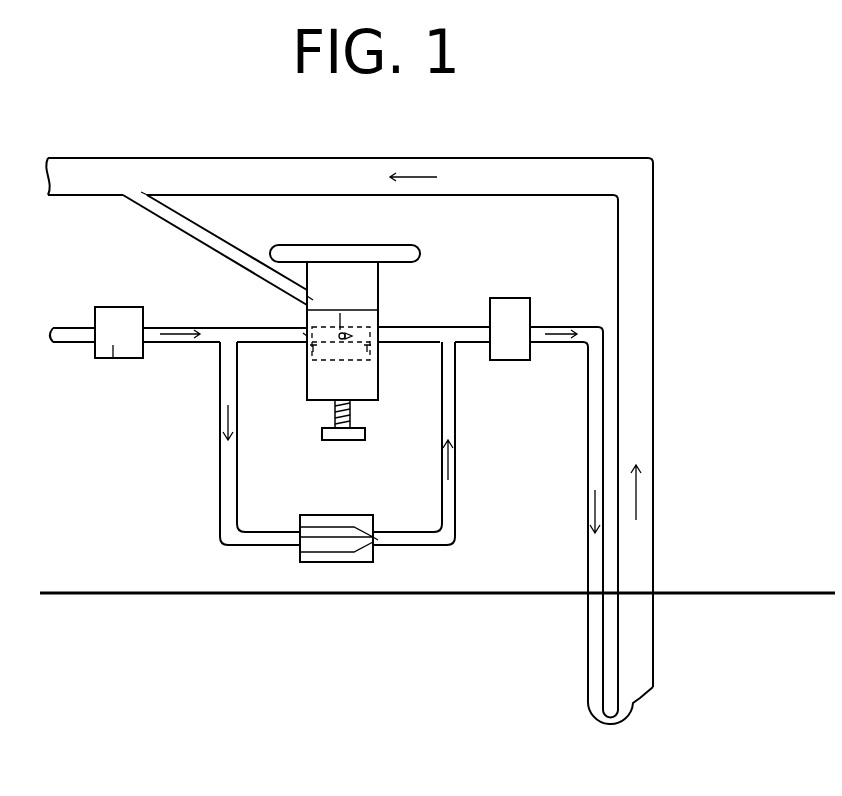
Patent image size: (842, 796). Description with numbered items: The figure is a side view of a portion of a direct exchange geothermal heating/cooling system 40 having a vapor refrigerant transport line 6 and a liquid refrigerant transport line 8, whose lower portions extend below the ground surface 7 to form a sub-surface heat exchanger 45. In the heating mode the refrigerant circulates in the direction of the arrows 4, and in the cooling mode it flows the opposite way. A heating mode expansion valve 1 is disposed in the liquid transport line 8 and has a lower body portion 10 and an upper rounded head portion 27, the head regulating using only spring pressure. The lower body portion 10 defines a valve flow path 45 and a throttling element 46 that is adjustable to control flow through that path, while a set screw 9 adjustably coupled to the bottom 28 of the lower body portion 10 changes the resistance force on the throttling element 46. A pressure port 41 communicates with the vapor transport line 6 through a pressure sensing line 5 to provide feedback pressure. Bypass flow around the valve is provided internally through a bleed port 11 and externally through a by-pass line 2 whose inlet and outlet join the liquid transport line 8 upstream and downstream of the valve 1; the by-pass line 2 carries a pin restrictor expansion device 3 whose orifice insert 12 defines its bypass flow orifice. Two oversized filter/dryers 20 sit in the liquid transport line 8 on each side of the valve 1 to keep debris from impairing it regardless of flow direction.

The heating mode expansion valve 1 is at (303, 365).
The by-pass line 2 is at (220, 497).
The pin restrictor expansion device 3 is at (340, 515).
The arrows 4 is at (222, 412).
The pressure sensing line 5 is at (187, 238).
The vapor refrigerant transport line 6 is at (640, 280).
The ground surface 7 is at (727, 593).
The liquid refrigerant transport line 8 is at (72, 325).
The set screw 9 is at (333, 440).
The lower body portion 10 is at (362, 310).
The bleed port 11 is at (375, 355).
The orifice insert 12 is at (303, 332).
The filter/dryers 20 is at (118, 358).
The rounded head portion 27 is at (422, 250).
The bottom 28 is at (370, 403).
The direct exchange geothermal heating/cooling system 40 is at (690, 165).
The pressure port 41 is at (312, 300).
The sub-surface heat exchanger / valve flow path 45 is at (370, 334).
The throttling element 46 is at (340, 334).